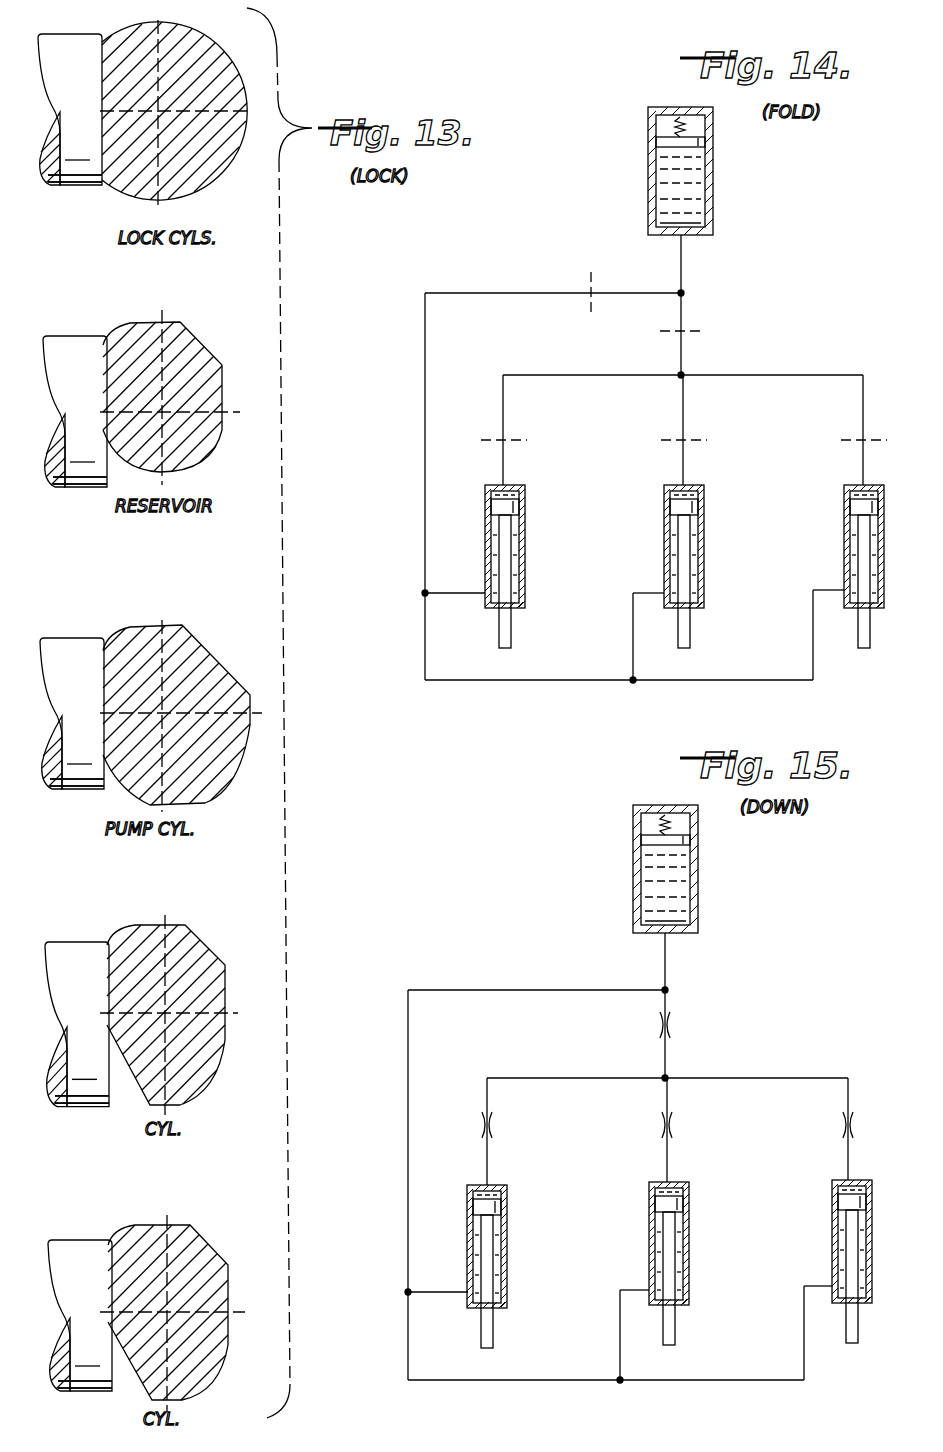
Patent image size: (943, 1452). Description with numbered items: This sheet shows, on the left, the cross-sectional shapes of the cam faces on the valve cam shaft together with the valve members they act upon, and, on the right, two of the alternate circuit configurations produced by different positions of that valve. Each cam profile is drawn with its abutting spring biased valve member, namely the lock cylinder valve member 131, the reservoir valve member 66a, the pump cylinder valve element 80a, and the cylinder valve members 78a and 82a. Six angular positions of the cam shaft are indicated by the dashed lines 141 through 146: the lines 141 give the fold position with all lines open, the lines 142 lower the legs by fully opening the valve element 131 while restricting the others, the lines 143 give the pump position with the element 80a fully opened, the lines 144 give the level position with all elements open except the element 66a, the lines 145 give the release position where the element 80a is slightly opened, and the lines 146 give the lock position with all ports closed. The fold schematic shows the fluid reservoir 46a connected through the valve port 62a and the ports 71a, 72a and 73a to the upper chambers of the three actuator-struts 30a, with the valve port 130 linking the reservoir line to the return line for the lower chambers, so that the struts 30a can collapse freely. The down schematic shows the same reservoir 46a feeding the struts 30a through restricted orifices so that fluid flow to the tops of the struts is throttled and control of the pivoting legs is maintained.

In FIG. 13, the dashed line 141 is at (157, 22).
In FIG. 13, the dashed line 142 is at (236, 52).
In FIG. 13, the dashed line 143 is at (245, 122).
In FIG. 13, the dashed line 144 is at (160, 200).
In FIG. 13, the dashed line 145 is at (100, 184).
In FIG. 13, the dashed line 146 is at (102, 112).
In FIG. 13, the spring biased valve member 131 is at (45, 180).
In FIG. 13, the spring biased valve member 66a is at (48, 482).
In FIG. 13, the pump cylinder valve element 80a is at (85, 612).
In FIG. 13, the spring biased valve member 78a is at (82, 910).
In FIG. 13, the spring biased valve member 82a is at (92, 1212).
In FIG. 14, the fluid reservoir 46a is at (713, 190).
In FIG. 15, the fluid reservoir 46a is at (695, 893).
In FIG. 14, the valve port 130 is at (591, 272).
In FIG. 14, the valve port 62a is at (702, 332).
In FIG. 14, the valve port 71a is at (520, 440).
In FIG. 14, the valve port 72a is at (702, 440).
In FIG. 14, the valve port 73a is at (882, 440).
In FIG. 14, the actuator-strut 30a is at (525, 560).
In FIG. 15, the actuator-strut 30a is at (508, 1242).